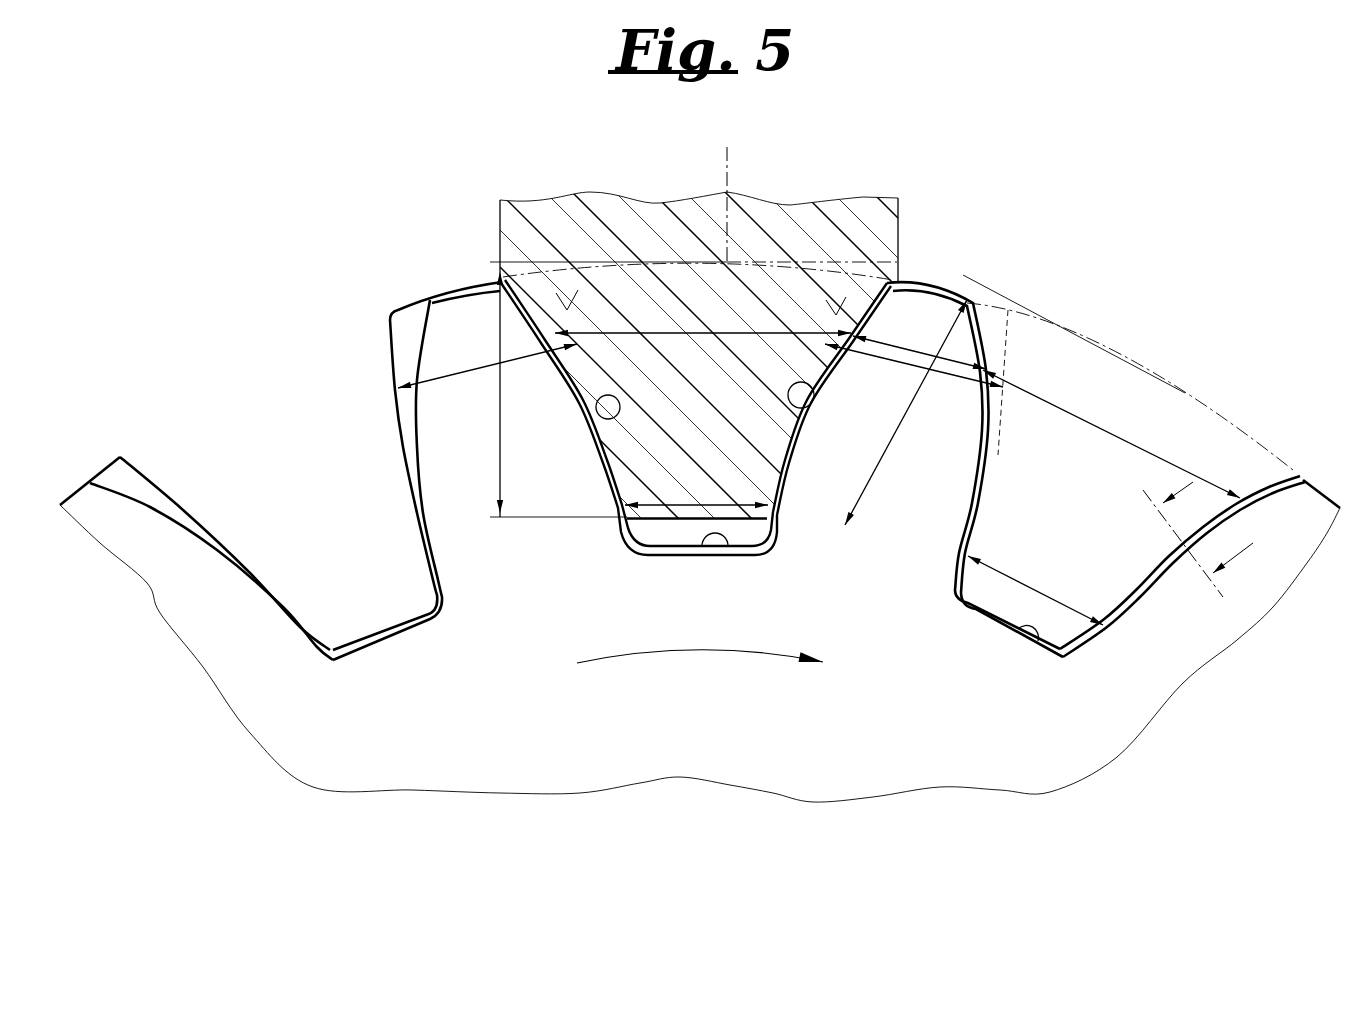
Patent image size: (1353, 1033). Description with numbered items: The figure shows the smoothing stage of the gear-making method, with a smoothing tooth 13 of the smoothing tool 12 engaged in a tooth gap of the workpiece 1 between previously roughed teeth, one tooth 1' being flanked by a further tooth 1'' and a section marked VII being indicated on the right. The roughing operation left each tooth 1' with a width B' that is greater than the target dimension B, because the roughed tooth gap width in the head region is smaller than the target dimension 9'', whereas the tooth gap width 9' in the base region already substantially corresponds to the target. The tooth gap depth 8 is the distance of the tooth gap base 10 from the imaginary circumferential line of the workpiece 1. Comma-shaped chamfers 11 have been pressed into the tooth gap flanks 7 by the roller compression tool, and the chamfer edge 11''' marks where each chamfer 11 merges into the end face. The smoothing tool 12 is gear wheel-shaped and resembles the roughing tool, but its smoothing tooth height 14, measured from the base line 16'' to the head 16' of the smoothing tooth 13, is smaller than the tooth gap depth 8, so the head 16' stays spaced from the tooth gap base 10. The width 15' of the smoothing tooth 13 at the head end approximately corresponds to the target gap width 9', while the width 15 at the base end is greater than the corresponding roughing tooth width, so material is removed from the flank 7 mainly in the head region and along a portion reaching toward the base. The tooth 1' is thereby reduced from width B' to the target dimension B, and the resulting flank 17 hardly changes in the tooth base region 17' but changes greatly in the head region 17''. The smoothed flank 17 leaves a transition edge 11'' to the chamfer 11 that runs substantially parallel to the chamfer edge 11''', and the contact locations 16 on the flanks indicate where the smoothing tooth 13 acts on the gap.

The workpiece 1 is at (417, 390).
The tooth 1' is at (975, 420).
The further gear tooth 1'' is at (1202, 504).
The tooth gap flank 7 is at (563, 333).
The tooth gap depth 8 is at (906, 412).
The tooth gap width in the base region 9' is at (1035, 589).
The target dimension of the tooth gap width 9'' is at (1111, 434).
The tooth gap base 10 is at (730, 550).
The chamfer 11 is at (921, 442).
The transition edge 11'' is at (1128, 411).
The chamfer edge 11''' is at (1211, 660).
The smoothing tool 12 is at (876, 211).
The smoothing tooth 13 is at (637, 455).
The smoothing tooth height 14 is at (548, 358).
The width of the smoothing tooth at the base end 15 is at (703, 318).
The width of the smoothing tooth at the head end 15' is at (696, 491).
The contact point 16 is at (706, 429).
The head of the smoothing tooth 16' is at (632, 578).
The base line 16'' is at (693, 185).
The flank 17 is at (861, 376).
The tooth base region of the flank 17' is at (948, 568).
The head region of the flank 17'' is at (1113, 333).
The target dimension of the tooth width B is at (919, 341).
The width of the roughed tooth B' is at (700, 403).
The section line VII- VII is at (1184, 531).